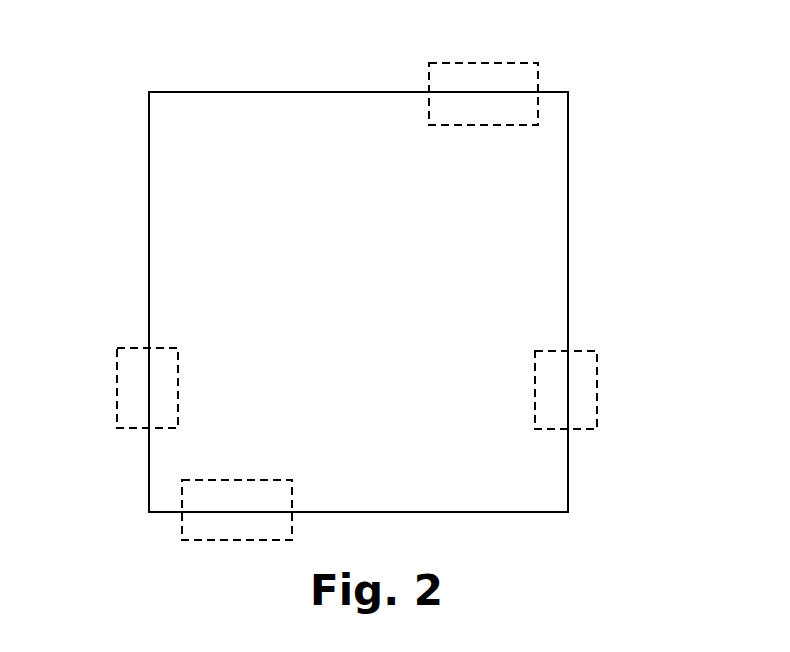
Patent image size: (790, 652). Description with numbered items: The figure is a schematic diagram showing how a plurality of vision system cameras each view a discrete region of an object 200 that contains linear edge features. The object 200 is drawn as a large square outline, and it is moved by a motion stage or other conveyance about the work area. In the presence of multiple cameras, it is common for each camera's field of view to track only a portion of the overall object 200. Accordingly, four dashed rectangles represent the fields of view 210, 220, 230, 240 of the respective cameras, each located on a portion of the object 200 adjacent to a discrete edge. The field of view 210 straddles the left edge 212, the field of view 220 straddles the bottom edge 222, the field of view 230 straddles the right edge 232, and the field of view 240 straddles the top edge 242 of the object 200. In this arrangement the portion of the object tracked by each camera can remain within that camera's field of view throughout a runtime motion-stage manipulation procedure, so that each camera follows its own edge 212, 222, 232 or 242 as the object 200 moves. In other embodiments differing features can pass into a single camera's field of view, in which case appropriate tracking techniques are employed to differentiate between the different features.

The object 200 is at (580, 172).
The field of view 210 is at (157, 347).
The edge 212 is at (148, 375).
The field of view 220 is at (253, 540).
The edge 222 is at (227, 512).
The field of view 230 is at (598, 362).
The edge 232 is at (569, 393).
The field of view 240 is at (480, 62).
The edge 242 is at (448, 93).